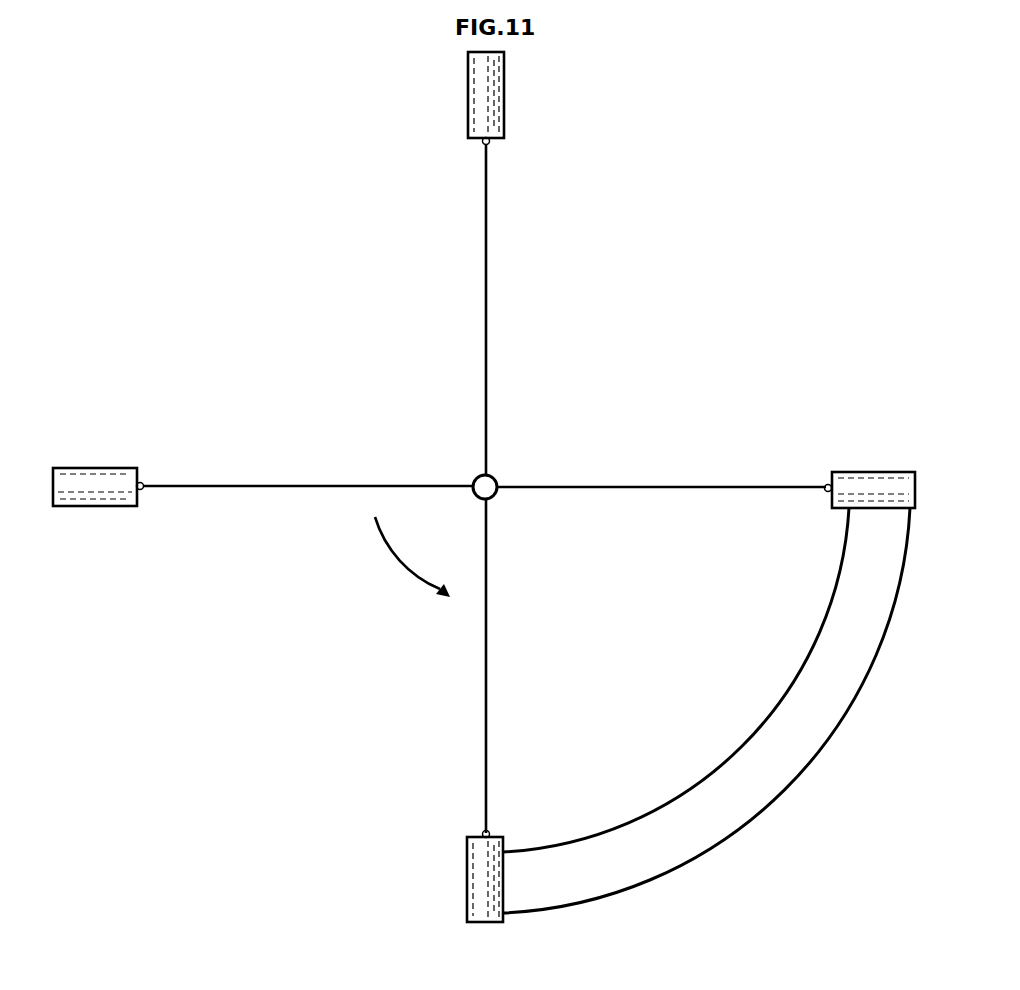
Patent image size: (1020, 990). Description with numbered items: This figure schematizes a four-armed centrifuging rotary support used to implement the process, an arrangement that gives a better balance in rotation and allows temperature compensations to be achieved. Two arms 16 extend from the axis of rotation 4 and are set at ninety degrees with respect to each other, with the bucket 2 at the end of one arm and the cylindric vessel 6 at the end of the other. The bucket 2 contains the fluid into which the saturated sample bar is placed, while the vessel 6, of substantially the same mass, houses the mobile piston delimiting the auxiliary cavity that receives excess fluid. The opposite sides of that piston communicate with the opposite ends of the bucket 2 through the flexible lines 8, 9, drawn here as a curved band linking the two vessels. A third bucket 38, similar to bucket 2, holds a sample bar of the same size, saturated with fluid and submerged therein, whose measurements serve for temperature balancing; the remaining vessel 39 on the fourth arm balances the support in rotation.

The vessel or bucket 2 is at (870, 470).
The axis of rotation 4 is at (494, 477).
The cylindric vessel 6 is at (465, 887).
The flexible line 8 is at (787, 789).
The flexible line 9 is at (762, 728).
The arm 16 is at (484, 405).
The third bucket 38 is at (88, 467).
The end weight 39 is at (466, 96).